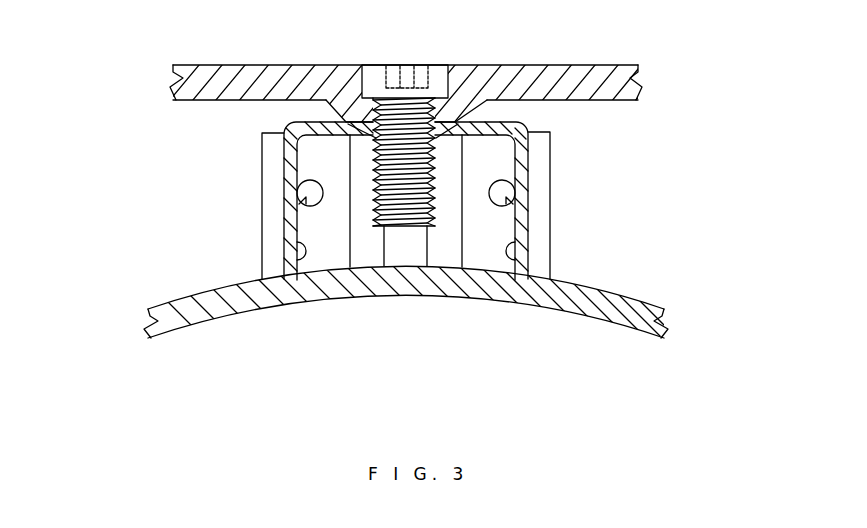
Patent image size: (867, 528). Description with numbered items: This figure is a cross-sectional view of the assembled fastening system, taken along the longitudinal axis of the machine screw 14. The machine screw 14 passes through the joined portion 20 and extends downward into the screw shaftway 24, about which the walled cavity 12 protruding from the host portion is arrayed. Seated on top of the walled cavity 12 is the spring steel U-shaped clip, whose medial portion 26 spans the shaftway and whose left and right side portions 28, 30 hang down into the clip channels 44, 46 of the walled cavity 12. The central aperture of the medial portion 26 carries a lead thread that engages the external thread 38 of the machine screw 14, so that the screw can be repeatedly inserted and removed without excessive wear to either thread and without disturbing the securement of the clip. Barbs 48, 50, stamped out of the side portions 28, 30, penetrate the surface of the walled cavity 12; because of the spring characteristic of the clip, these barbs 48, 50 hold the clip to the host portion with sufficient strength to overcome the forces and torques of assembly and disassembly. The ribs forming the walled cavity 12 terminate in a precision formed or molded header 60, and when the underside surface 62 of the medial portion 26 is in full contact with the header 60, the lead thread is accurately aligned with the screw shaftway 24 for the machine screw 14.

The walled cavity 12 is at (406, 199).
The machine screw 14 is at (478, 227).
The joined portion 20 is at (617, 97).
The screw shaftway 24 is at (403, 248).
The medial portion 26 is at (338, 118).
The left side portion 28 is at (528, 193).
The right side portion 30 is at (287, 228).
The external thread 38 is at (378, 173).
The clip channel 44 is at (532, 266).
The clip channel 46 is at (290, 277).
The barb 48 is at (505, 205).
The barb 50 is at (303, 198).
The header 60 is at (284, 131).
The underside surface 62 is at (483, 138).